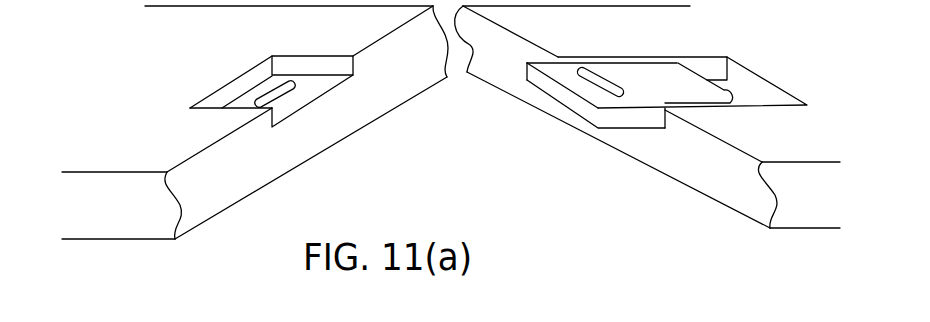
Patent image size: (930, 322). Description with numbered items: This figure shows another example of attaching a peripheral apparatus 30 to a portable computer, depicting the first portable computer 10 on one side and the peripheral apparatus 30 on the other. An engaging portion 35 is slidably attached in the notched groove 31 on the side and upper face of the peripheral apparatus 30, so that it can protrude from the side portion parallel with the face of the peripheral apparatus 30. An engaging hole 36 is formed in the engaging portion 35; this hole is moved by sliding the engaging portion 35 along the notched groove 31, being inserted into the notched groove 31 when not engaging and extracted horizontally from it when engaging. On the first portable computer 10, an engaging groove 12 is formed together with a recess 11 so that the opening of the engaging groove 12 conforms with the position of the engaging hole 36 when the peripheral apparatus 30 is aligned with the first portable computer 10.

The first portable computer 10 is at (180, 72).
The notch in first plate 11 is at (320, 90).
The engaging groove 12 is at (273, 100).
The peripheral apparatus 30 is at (581, 38).
The notched groove 31 is at (763, 97).
The engaging portion 35 is at (671, 80).
The engaging hole 36 is at (575, 71).